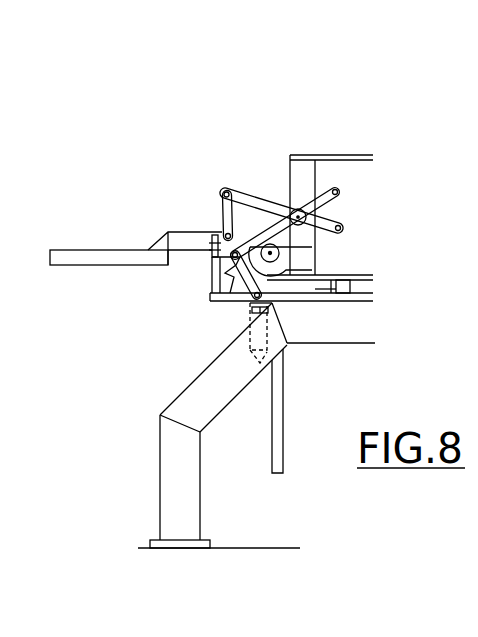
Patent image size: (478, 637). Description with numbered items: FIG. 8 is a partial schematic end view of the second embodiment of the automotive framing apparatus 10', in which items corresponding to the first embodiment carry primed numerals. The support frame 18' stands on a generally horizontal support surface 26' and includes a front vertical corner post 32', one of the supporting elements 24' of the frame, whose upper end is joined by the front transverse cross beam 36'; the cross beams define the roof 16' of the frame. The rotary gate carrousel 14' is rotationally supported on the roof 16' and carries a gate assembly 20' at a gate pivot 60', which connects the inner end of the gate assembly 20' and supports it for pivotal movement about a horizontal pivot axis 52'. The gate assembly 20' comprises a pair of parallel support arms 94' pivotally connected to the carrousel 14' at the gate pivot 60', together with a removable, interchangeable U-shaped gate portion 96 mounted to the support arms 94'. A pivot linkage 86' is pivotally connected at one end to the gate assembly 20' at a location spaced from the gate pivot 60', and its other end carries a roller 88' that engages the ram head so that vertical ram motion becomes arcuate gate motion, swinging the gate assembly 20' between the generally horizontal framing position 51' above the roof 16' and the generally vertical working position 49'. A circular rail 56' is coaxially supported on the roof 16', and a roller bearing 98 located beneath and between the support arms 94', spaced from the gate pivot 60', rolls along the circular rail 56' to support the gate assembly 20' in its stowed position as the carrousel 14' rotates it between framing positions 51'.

The framing apparatus 10' is at (355, 90).
The roller 88' is at (304, 192).
The support arms 94' is at (260, 196).
The pivot linkage 86' is at (224, 177).
The gate pivot 60' is at (330, 223).
The horizontal pivot axis 52' is at (338, 244).
The rotary gate carrousel 14' is at (352, 264).
The roof 16' is at (330, 285).
The framing position 51' is at (109, 212).
The gate assembly 20' is at (199, 266).
The roller bearing 98 is at (210, 246).
The circular rail 56' is at (193, 287).
The front transverse cross beam 36' is at (328, 339).
The support frame 18' is at (190, 373).
The front vertical corner post 32' is at (105, 477).
The supporting elements 24' is at (151, 490).
The support surface 26' is at (219, 517).
The U-shaped gate portion 96 is at (283, 390).
The working position 49' is at (327, 404).